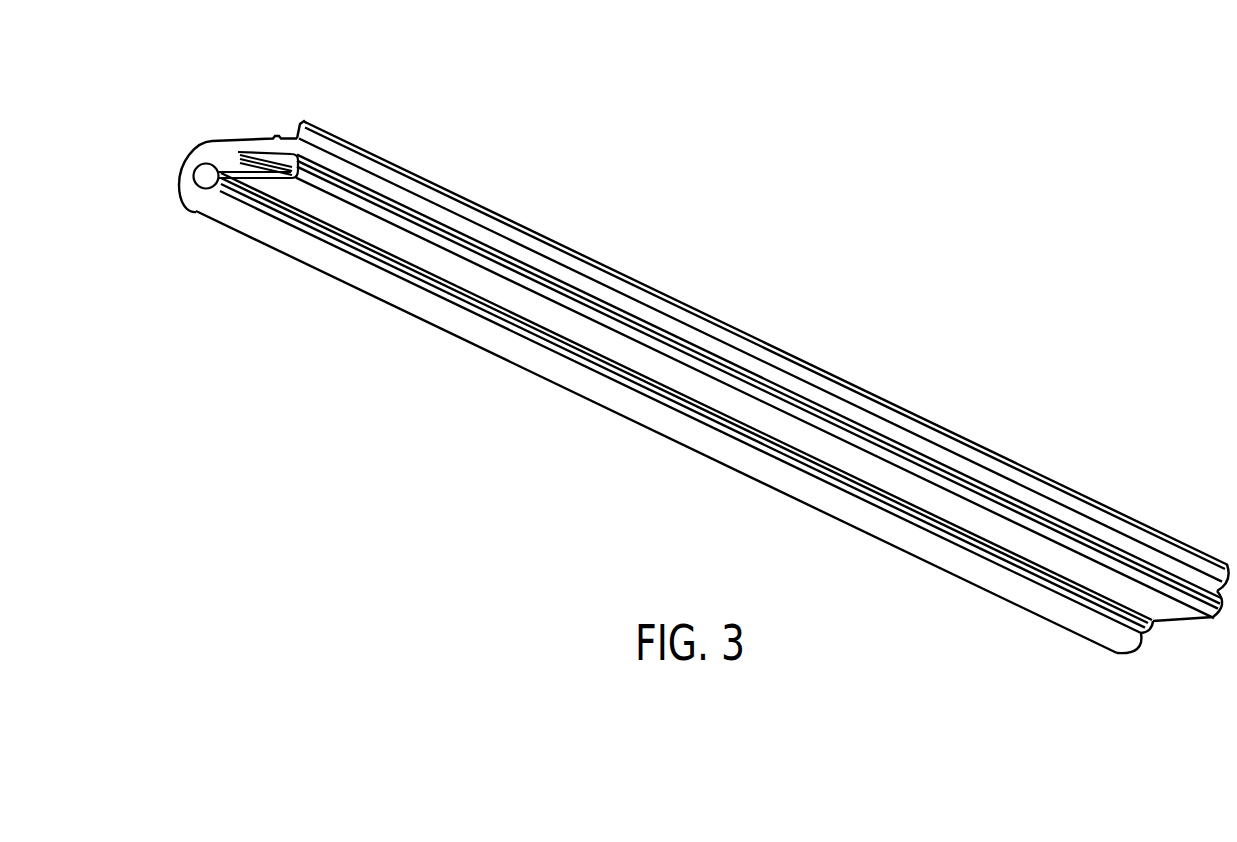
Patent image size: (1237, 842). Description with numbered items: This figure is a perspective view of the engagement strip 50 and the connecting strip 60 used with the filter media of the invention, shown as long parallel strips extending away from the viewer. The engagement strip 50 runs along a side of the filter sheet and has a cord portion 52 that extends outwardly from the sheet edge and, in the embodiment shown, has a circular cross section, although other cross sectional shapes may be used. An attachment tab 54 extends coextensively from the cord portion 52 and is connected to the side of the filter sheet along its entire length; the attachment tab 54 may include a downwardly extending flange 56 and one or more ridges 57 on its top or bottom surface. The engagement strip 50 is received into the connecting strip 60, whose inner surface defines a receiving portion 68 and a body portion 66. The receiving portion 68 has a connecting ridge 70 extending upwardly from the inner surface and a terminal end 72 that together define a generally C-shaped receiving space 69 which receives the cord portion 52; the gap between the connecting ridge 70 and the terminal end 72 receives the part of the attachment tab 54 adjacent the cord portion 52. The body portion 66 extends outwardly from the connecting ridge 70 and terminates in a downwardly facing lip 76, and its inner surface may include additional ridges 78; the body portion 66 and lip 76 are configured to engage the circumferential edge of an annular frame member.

The engagement strip 50 is at (248, 167).
The cord portion 52 is at (203, 172).
The attachment tab 54 is at (348, 214).
The downwardly extending flange 56 is at (318, 156).
The ridges 57 is at (420, 270).
The connecting strip 60 is at (307, 263).
The body portion 66 is at (233, 168).
The receiving portion 68 is at (197, 203).
The C-shaped receiving space 69 is at (196, 214).
The connecting ridge 70 is at (238, 152).
The terminal end 72 is at (222, 200).
The downwardly facing lip 76 is at (250, 172).
The additional ridges 78 is at (258, 152).